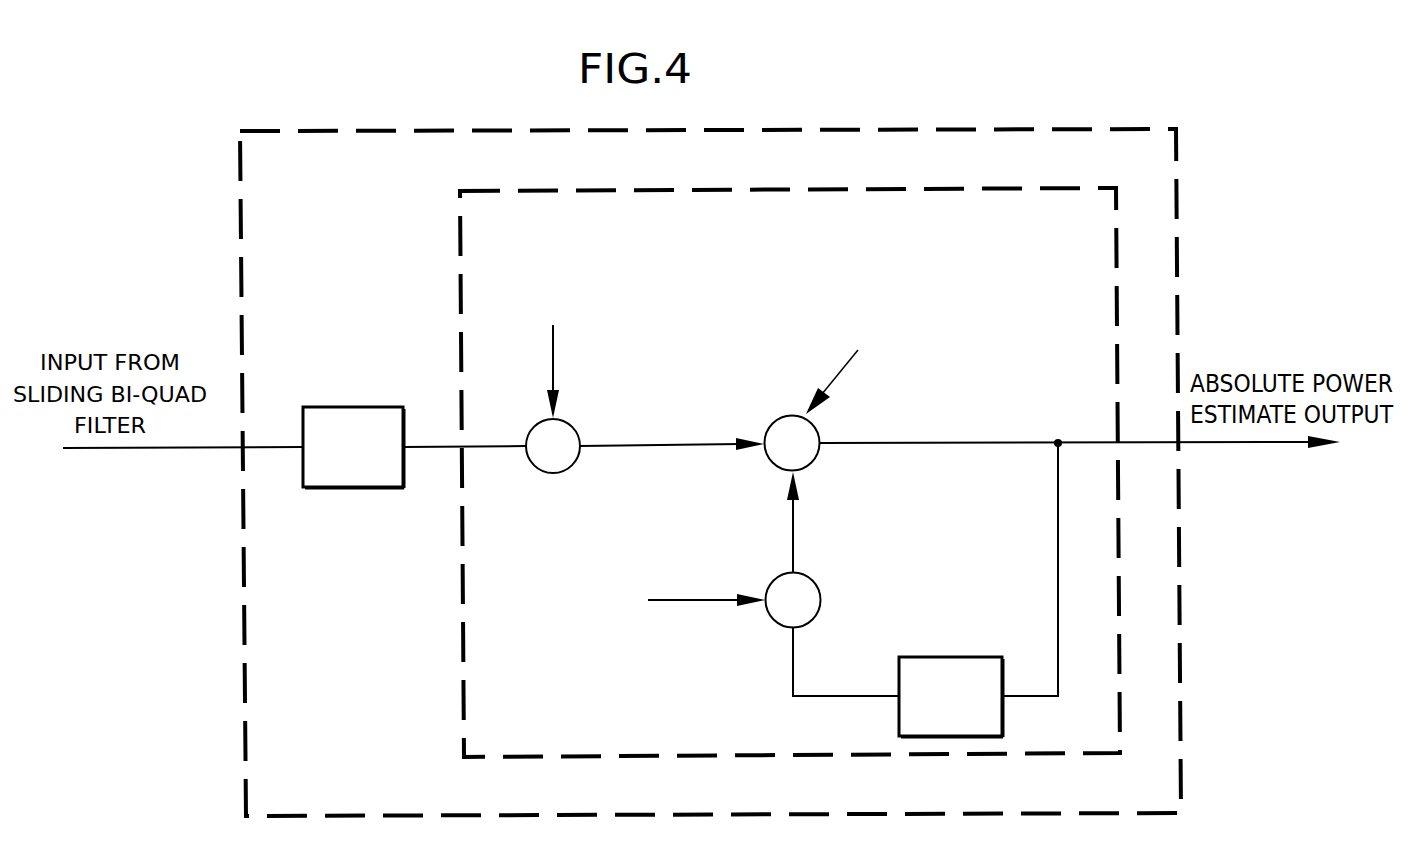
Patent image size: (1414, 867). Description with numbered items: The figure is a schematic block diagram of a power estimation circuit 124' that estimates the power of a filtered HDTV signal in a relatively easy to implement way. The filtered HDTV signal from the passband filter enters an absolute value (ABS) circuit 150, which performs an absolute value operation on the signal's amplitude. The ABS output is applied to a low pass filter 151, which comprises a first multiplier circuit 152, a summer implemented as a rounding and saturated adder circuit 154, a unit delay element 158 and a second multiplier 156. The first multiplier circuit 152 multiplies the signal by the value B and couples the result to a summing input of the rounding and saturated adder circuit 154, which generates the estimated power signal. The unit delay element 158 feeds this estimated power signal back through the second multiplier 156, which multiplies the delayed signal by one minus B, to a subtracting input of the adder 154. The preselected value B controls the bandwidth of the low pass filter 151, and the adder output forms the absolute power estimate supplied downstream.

The power estimation circuit 124' is at (710, 436).
The low pass filter 151 is at (750, 190).
The absolute value (ABS) circuit 150 is at (378, 407).
The first multiplier circuit 152 is at (572, 425).
The rounding and saturated adder circuit 154 is at (788, 415).
The second multiplier 156 is at (818, 588).
The unit delay element 158 is at (950, 657).